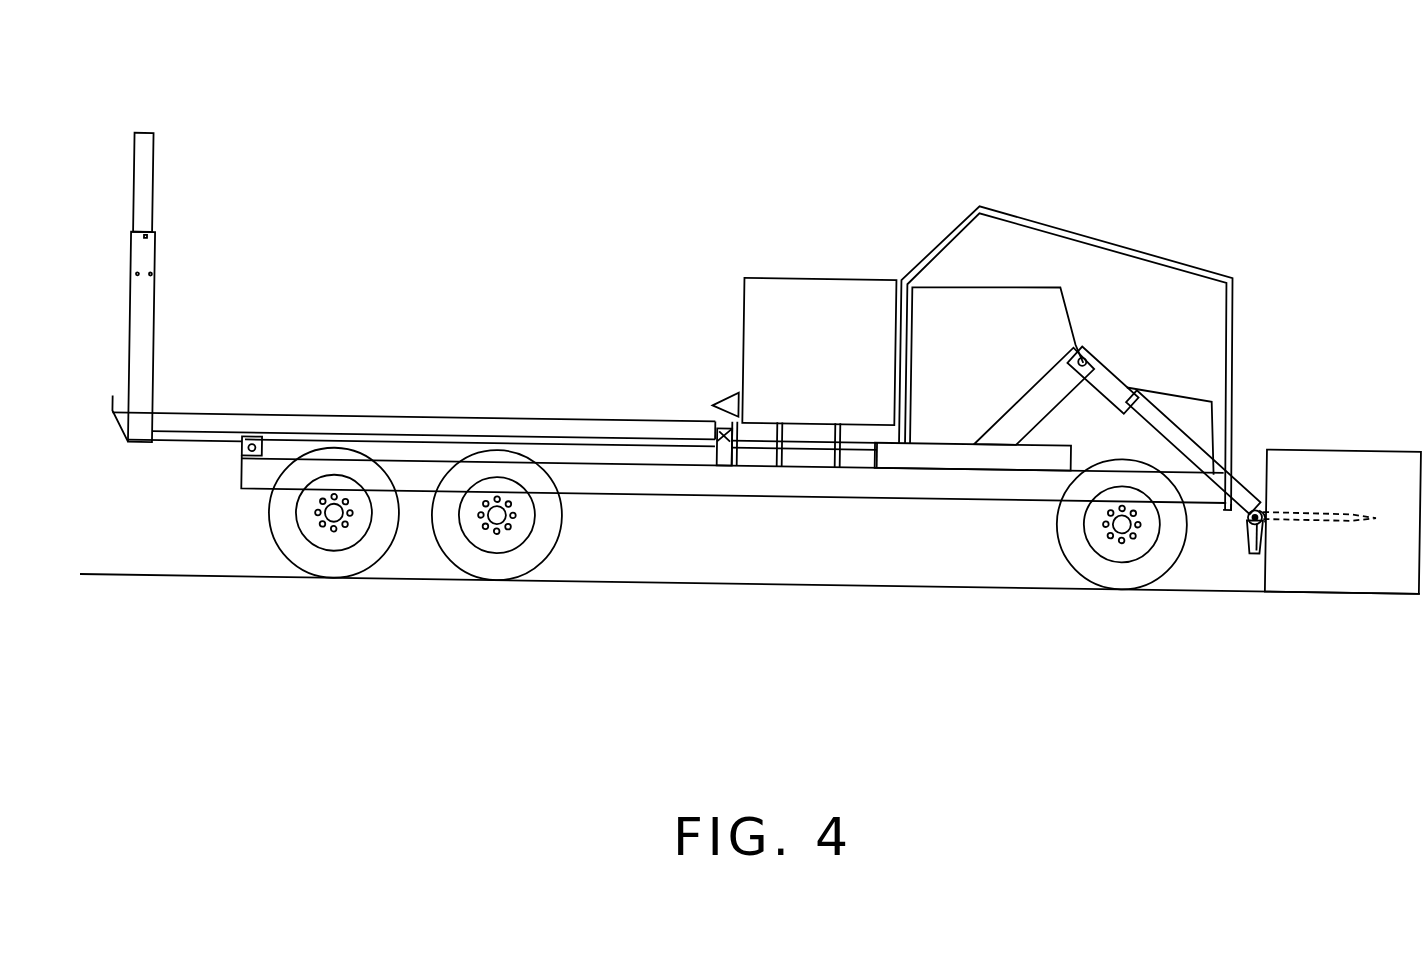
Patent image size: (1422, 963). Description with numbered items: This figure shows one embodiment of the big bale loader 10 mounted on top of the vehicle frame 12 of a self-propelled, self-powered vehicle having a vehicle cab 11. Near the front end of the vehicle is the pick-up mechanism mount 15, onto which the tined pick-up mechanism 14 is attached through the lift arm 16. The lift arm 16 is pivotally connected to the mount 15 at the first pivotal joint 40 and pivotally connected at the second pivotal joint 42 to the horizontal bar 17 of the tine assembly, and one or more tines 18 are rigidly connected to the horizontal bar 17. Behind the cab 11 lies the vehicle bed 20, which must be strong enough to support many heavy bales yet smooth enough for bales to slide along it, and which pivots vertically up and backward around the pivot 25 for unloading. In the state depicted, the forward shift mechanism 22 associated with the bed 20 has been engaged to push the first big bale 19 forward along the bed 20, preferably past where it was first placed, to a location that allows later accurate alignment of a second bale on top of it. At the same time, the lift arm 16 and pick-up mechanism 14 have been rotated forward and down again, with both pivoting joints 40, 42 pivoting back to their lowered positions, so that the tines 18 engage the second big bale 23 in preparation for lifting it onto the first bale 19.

The big bale loader 10 is at (677, 122).
The vehicle cab 11 is at (1005, 275).
The vehicle frame 12 is at (764, 482).
The tined pick-up mechanism 14 is at (1190, 421).
The pick-up mechanism mount 15 is at (1030, 382).
The lift arm 16 is at (1140, 415).
The horizontal bar 17 is at (1247, 501).
The tine 18 is at (1328, 505).
The first big bale 19 is at (790, 268).
The vehicle bed 20 is at (462, 414).
The forward shift mechanism 22 is at (712, 396).
The second big bale 23 is at (1379, 432).
The pivot 25 is at (247, 448).
The first pivotal joint 40 is at (1260, 494).
The second pivotal joint 42 is at (1084, 343).